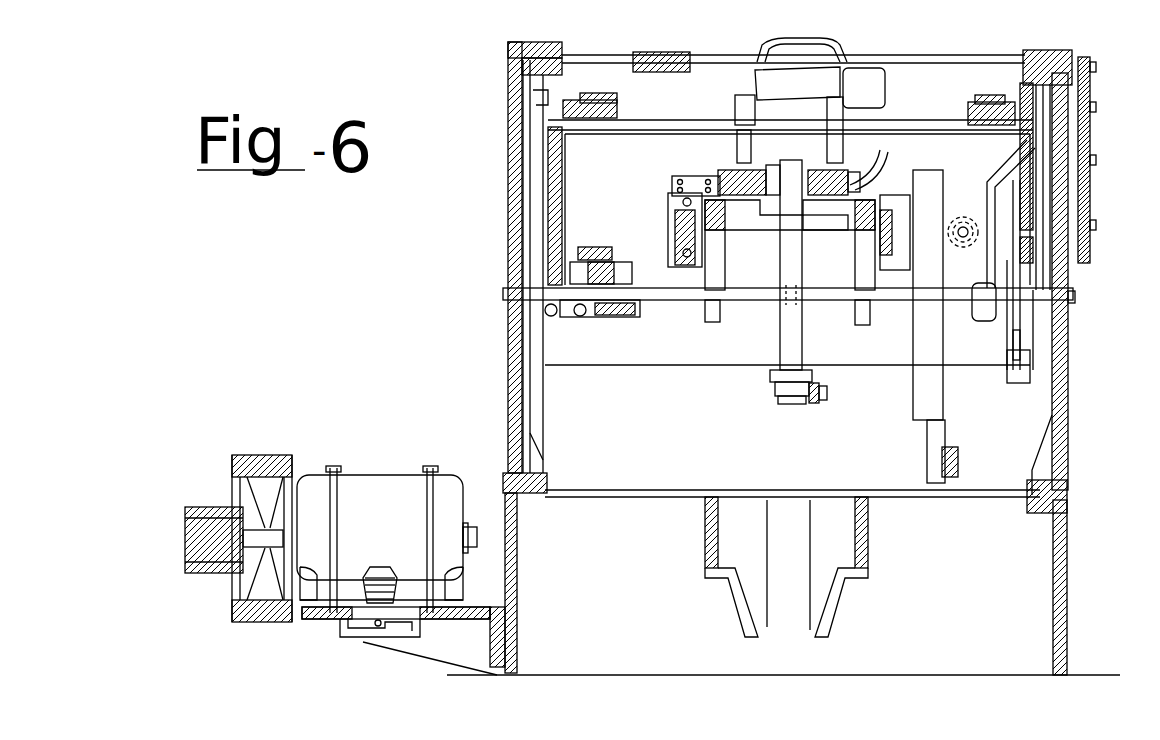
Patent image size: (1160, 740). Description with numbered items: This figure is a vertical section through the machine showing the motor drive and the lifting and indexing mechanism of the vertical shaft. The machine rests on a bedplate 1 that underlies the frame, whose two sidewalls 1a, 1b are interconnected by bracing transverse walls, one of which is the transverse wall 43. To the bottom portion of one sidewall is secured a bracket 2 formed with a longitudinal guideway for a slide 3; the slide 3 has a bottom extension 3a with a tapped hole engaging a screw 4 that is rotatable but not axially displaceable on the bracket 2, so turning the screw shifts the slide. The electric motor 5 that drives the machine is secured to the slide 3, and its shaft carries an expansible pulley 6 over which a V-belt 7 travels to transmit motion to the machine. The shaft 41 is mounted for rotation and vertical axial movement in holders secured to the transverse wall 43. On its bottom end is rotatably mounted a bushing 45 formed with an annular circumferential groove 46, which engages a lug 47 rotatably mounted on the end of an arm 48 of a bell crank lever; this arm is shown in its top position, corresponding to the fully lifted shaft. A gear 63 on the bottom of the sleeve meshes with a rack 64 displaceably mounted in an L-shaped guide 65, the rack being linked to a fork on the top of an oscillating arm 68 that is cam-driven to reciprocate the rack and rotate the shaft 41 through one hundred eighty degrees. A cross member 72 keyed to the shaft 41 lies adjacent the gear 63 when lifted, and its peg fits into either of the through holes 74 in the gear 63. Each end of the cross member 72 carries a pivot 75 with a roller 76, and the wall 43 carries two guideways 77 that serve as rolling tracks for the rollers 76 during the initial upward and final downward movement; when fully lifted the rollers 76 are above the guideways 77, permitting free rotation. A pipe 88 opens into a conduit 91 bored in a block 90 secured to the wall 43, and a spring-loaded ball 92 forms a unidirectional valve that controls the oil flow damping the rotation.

The bedplate 1 is at (1052, 595).
The sidewall 1a is at (512, 108).
The sidewall 1b is at (1090, 86).
The bracket 2 is at (446, 618).
The slide 3 is at (340, 618).
The bottom extension 3a is at (348, 633).
The screw 4 is at (362, 640).
The electric motor 5 is at (378, 477).
The expansible pulley 6 is at (208, 474).
The V-belt 7 is at (268, 455).
The shaft 41 is at (782, 330).
The transverse wall 43 is at (565, 180).
The bushing 45 is at (775, 402).
The annular circumferential groove 46 is at (775, 390).
The lug 47 is at (812, 408).
The arm 48 is at (826, 398).
The gear 63 is at (852, 188).
The rack 64 is at (748, 182).
The L-shaped guide 65 is at (722, 182).
The arm 68 is at (622, 117).
The cross member 72 is at (826, 232).
The through holes 74 is at (858, 188).
The pivot 75 is at (680, 226).
The roller 76 is at (725, 238).
The guideways 77 is at (705, 310).
The pipe 88 is at (934, 182).
The block 90 is at (967, 216).
The conduit 91 is at (980, 240).
The ball 92 is at (920, 232).